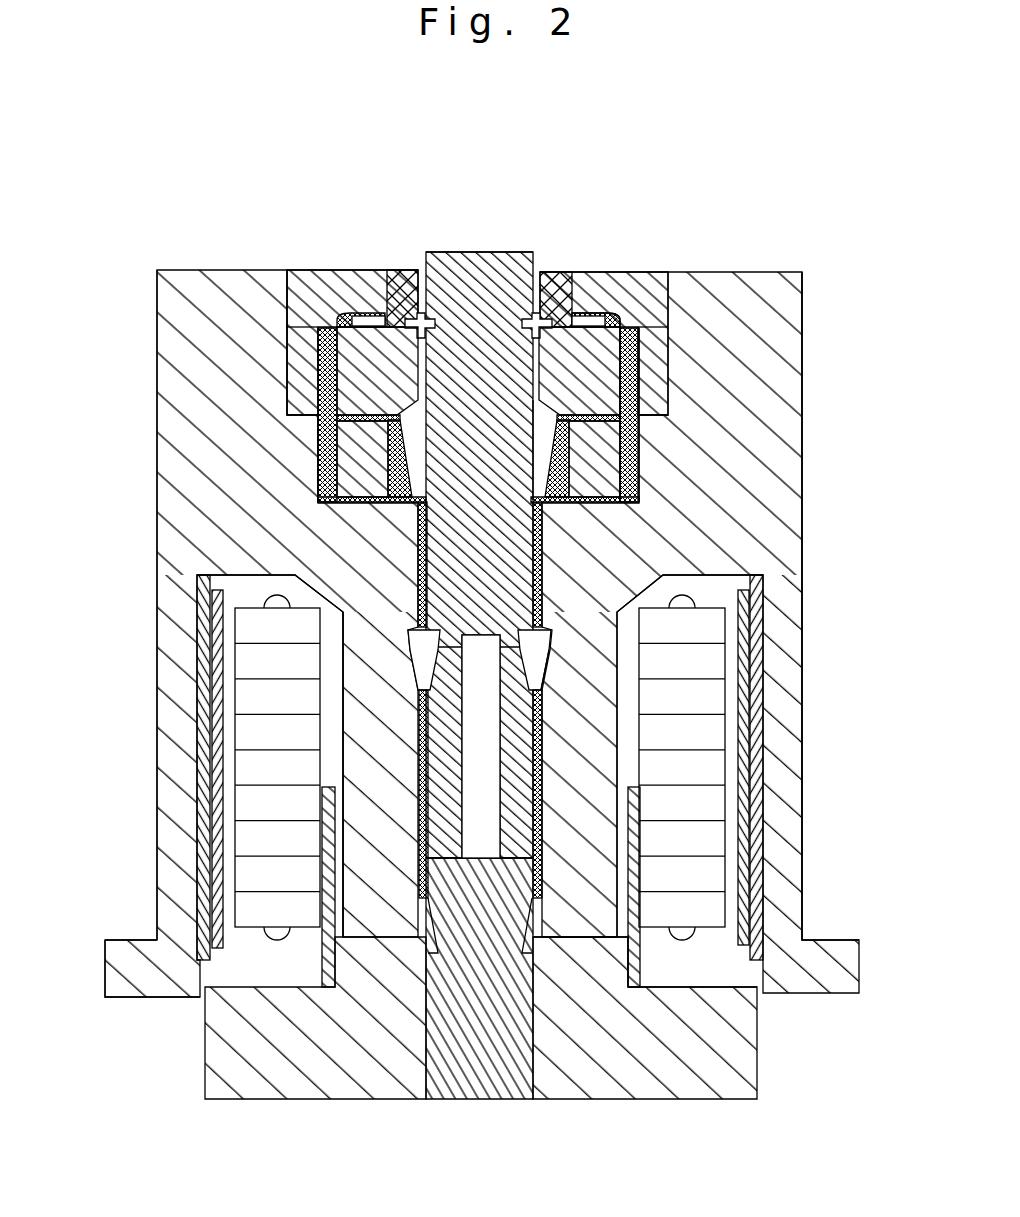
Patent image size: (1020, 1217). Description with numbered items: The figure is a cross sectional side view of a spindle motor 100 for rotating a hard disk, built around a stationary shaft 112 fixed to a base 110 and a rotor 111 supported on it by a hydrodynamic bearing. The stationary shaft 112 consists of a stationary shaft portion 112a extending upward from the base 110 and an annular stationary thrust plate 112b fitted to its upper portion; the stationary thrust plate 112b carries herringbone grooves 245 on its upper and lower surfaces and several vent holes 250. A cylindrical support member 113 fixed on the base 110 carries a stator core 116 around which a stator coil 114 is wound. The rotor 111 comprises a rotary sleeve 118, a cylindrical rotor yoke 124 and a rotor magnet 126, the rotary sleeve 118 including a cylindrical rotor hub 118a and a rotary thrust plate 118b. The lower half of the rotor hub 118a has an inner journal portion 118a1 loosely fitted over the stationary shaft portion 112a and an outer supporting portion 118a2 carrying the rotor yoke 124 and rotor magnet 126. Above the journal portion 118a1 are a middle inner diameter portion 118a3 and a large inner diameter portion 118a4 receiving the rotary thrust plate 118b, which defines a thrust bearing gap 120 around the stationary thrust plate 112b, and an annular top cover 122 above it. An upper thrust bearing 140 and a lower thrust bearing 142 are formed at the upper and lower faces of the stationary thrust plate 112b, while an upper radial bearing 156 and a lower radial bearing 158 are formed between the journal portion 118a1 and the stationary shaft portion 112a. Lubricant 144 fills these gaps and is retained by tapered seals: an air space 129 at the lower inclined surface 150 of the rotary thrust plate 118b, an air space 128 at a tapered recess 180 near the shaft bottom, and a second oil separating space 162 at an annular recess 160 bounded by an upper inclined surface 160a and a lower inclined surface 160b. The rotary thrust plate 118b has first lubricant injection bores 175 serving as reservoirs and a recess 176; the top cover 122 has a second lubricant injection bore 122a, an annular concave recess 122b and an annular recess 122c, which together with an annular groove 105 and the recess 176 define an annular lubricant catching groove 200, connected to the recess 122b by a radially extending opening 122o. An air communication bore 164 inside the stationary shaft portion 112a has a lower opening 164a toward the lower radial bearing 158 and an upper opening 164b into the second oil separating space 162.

The spindle motor 100 is at (632, 140).
The annular groove 105 is at (418, 318).
The base 110 is at (745, 1058).
The rotor 111 is at (812, 670).
The stationary shaft 112 is at (510, 252).
The stationary shaft portion 112a is at (478, 250).
The stationary thrust plate 112b is at (560, 455).
The cylindrical support member 113 is at (756, 890).
The stator coil 114 is at (742, 850).
The stator core 116 is at (712, 945).
The rotary sleeve 118 is at (203, 292).
The cylindrical rotor hub 118a is at (802, 300).
The journal portion 118a1 is at (388, 908).
The supporting portion 118a2 is at (160, 870).
The middle inner diameter portion 118a3 is at (315, 488).
The large inner diameter portion 118a4 is at (157, 300).
The rotary thrust plate 118b is at (310, 385).
The thrust bearing gap 120 is at (320, 432).
The top cover 122 is at (333, 310).
The second lubricant injection bore 122a is at (615, 300).
The annular concave recess 122b is at (345, 312).
The annular recess 122c is at (572, 275).
The radially extending opening 122o is at (380, 312).
The cylindrical rotor yoke 124 is at (690, 783).
The rotor magnet 126 is at (668, 748).
The air space 128 is at (548, 942).
The air space 129 is at (663, 272).
The upper thrust bearing 140 is at (797, 272).
The lower thrust bearing 142 is at (595, 512).
The lubricant 144 is at (668, 380).
The lower inclined surface 150 is at (323, 292).
The upper radial bearing 156 is at (418, 566).
The lower radial bearing 158 is at (560, 725).
The annular recess 160 is at (552, 645).
The upper inclined surface 160a is at (556, 630).
The lower inclined surface 160b is at (555, 690).
The second oil separating space 162 is at (420, 640).
The air communication bore 164 is at (485, 800).
The lower opening 164a is at (528, 905).
The upper opening 164b is at (425, 685).
The first lubricant injection bore 175 is at (300, 340).
The recess 176 is at (560, 300).
The recess 180 is at (432, 945).
The annular lubricant catching groove 200 is at (545, 258).
The herringbone grooves 245 is at (340, 518).
The vent holes 250 is at (330, 458).